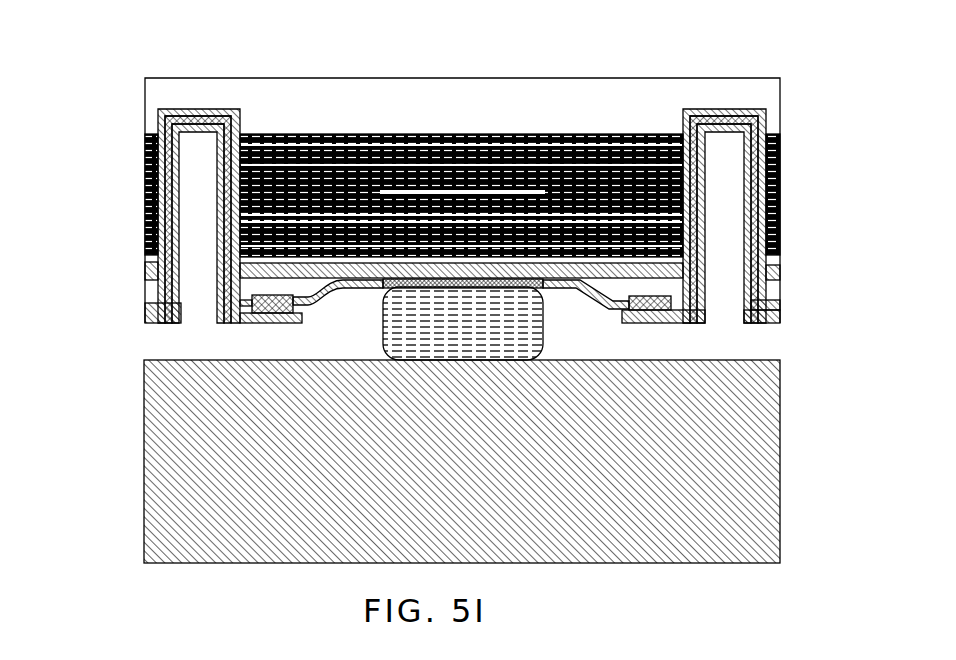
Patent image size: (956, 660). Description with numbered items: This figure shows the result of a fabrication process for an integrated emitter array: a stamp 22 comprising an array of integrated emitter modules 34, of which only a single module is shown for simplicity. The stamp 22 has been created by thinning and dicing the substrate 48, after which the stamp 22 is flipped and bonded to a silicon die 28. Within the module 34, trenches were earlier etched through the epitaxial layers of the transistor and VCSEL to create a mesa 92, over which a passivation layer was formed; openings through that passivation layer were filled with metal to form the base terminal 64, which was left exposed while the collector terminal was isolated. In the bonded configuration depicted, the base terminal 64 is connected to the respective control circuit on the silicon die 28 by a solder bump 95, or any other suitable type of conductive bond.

The stamp 22 is at (118, 88).
The silicon die 28 is at (781, 451).
The integrated emitter module 34 is at (718, 70).
The substrate 48 is at (781, 87).
The base terminal 64 is at (543, 291).
The mesa 92 is at (705, 200).
The solder bump 95 is at (382, 327).